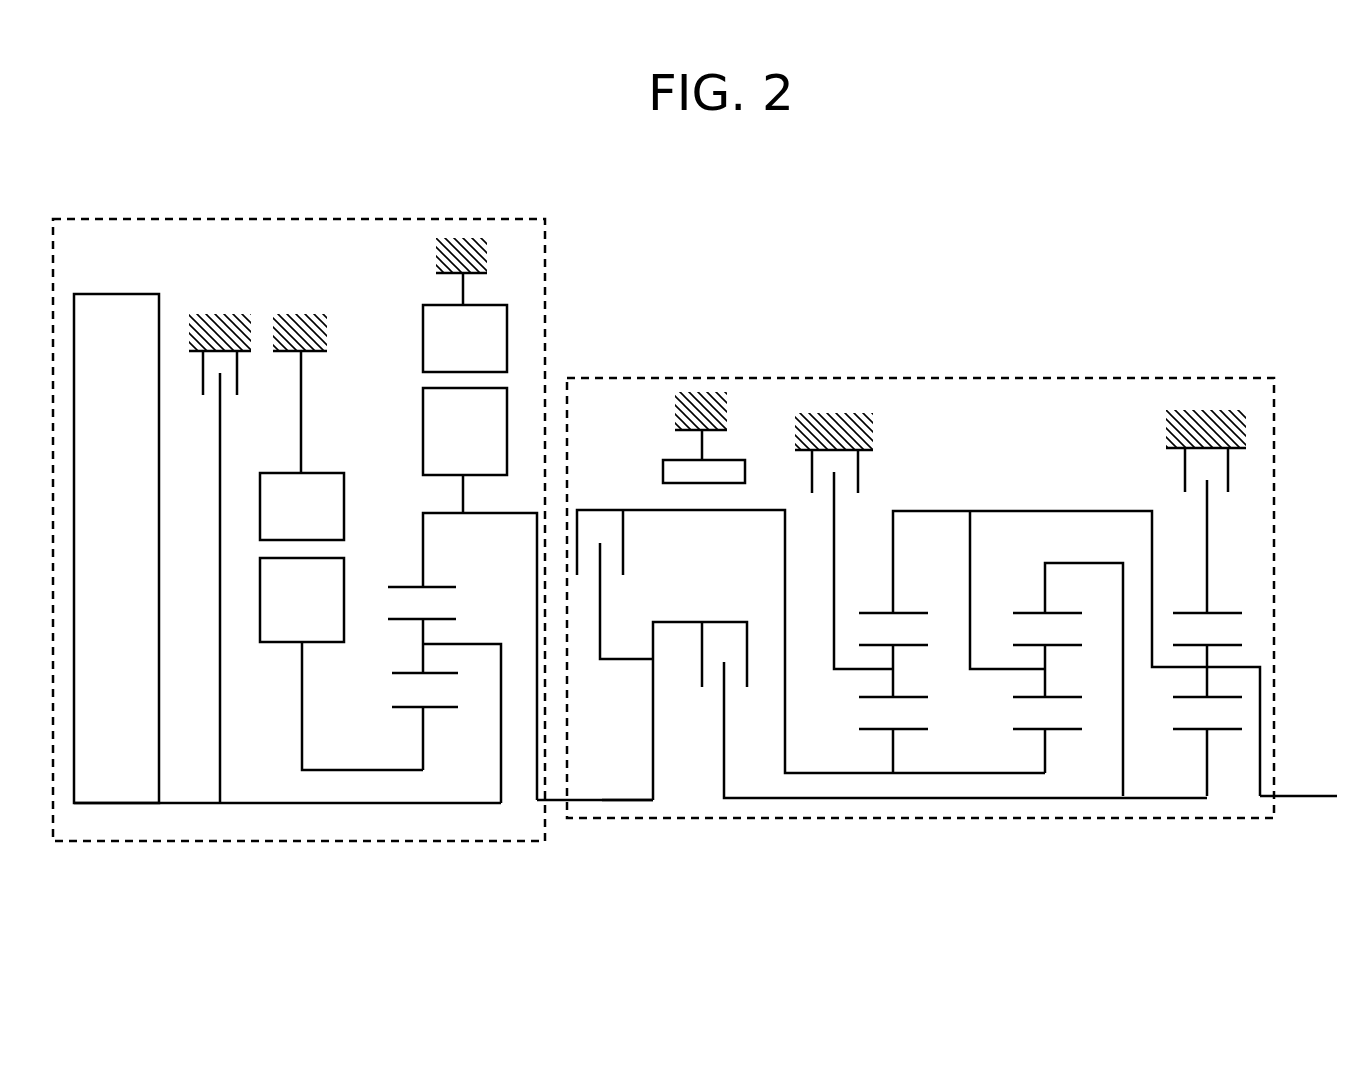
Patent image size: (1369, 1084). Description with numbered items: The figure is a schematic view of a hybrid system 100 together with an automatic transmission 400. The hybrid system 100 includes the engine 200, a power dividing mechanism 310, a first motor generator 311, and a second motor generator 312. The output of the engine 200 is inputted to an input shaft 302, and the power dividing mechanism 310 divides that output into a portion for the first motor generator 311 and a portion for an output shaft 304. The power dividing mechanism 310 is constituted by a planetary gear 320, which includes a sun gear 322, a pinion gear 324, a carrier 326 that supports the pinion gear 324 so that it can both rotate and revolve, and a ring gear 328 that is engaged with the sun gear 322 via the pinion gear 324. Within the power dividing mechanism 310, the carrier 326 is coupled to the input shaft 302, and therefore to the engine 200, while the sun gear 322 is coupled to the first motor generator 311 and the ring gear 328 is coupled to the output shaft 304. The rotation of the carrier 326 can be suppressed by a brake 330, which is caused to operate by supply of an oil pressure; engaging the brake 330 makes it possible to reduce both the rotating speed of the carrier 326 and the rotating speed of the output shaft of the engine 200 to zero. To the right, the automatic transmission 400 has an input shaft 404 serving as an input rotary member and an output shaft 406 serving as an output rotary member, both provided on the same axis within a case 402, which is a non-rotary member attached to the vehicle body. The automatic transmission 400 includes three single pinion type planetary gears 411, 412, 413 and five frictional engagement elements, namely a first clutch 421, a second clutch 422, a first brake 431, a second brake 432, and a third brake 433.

The hybrid system 100 is at (397, 219).
The engine 200 is at (117, 294).
The input shaft 302 is at (186, 803).
The output shaft 304 is at (555, 800).
The power dividing mechanism 310 is at (366, 812).
The first motor generator 311 is at (354, 501).
The second motor generator 312 is at (412, 335).
The planetary gear 320 is at (375, 623).
The sun gear 322 is at (413, 707).
The pinion gear 324 is at (420, 636).
The carrier 326 is at (470, 643).
The ring gear 328 is at (430, 590).
The brake 330 is at (237, 373).
The automatic transmission 400 is at (1057, 378).
The case 402 is at (703, 392).
The input shaft 404 is at (602, 800).
The output shaft 406 is at (1300, 796).
The planetary gear 411 is at (845, 707).
The planetary gear 412 is at (1003, 707).
The planetary gear 413 is at (1160, 712).
The C1 clutch 421 is at (702, 667).
The C2 clutch 422 is at (601, 510).
The B1 brake 431 is at (670, 460).
The B2 brake 432 is at (866, 478).
The B3 brake 433 is at (1228, 472).